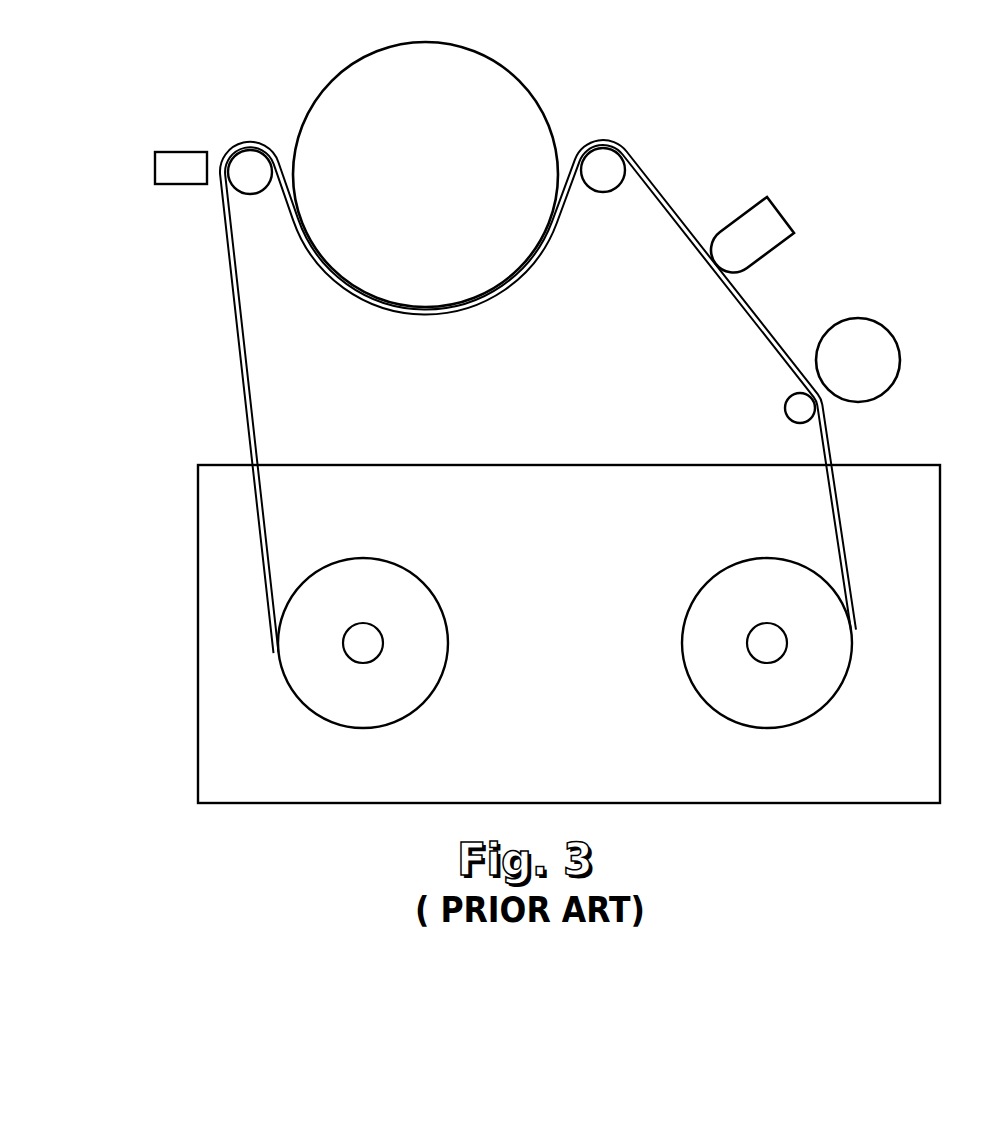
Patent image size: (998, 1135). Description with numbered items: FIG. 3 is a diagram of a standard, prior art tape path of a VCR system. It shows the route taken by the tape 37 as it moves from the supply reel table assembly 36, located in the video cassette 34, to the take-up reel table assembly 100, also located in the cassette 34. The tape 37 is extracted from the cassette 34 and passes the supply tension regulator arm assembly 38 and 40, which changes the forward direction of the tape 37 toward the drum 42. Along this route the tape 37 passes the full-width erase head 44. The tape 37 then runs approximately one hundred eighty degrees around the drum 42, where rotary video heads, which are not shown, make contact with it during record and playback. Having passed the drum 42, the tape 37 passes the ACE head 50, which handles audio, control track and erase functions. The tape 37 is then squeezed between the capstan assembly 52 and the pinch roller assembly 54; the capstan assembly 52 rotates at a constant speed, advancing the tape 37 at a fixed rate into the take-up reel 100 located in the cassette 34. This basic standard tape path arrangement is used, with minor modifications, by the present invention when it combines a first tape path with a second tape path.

The video cassette 34 is at (897, 463).
The supply reel table assembly 36 is at (385, 560).
The tape 37 is at (255, 395).
The supply tension regulator arm assembly 38 is at (252, 188).
The supply tension regulator arm assembly 40 is at (605, 184).
The drum 42 is at (435, 190).
The full-width erase head 44 is at (181, 152).
The ACE head 50 is at (760, 251).
The capstan assembly 52 is at (797, 418).
The pinch roller assembly 54 is at (865, 376).
The take-up reel table assembly 100 is at (715, 573).